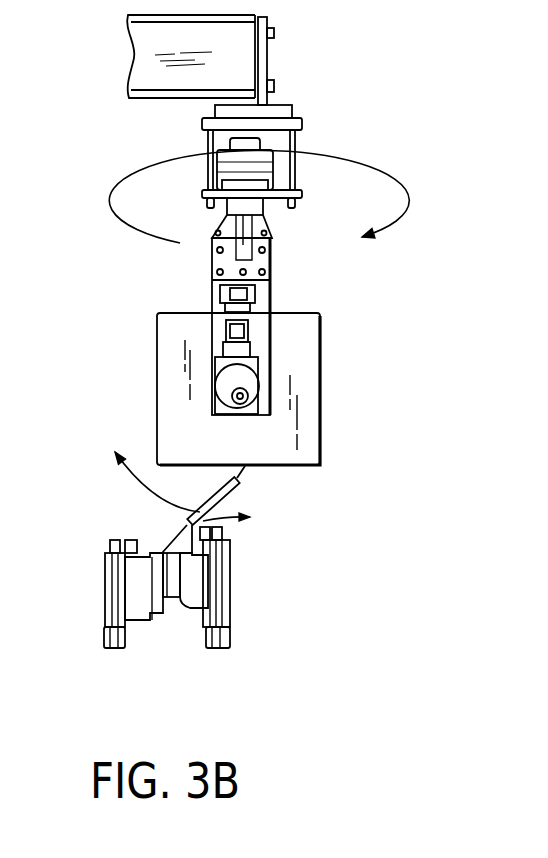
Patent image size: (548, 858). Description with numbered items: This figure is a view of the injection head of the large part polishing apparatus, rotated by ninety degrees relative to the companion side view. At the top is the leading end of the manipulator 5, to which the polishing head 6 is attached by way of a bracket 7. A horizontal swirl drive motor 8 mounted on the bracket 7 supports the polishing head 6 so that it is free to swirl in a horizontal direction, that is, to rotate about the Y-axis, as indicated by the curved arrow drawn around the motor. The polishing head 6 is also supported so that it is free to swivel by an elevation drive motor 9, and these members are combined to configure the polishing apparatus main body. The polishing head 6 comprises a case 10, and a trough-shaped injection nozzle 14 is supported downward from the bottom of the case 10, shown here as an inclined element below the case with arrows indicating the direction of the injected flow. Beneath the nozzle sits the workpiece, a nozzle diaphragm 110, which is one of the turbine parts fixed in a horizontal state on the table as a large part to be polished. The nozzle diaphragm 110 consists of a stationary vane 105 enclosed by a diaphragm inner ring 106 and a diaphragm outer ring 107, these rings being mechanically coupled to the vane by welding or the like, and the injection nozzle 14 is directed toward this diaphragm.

The manipulator 5 is at (136, 57).
The bracket 7 is at (292, 110).
The horizontal swirl drive motor 8 is at (207, 175).
The elevation drive motor 9 is at (223, 382).
The polishing head 6 is at (342, 371).
The case 10 is at (322, 440).
The injection nozzle 14 is at (233, 490).
The nozzle diaphragm 110 is at (156, 522).
The stationary vane 105 is at (173, 580).
The diaphragm inner ring 106 is at (193, 582).
The diaphragm outer ring 107 is at (135, 590).